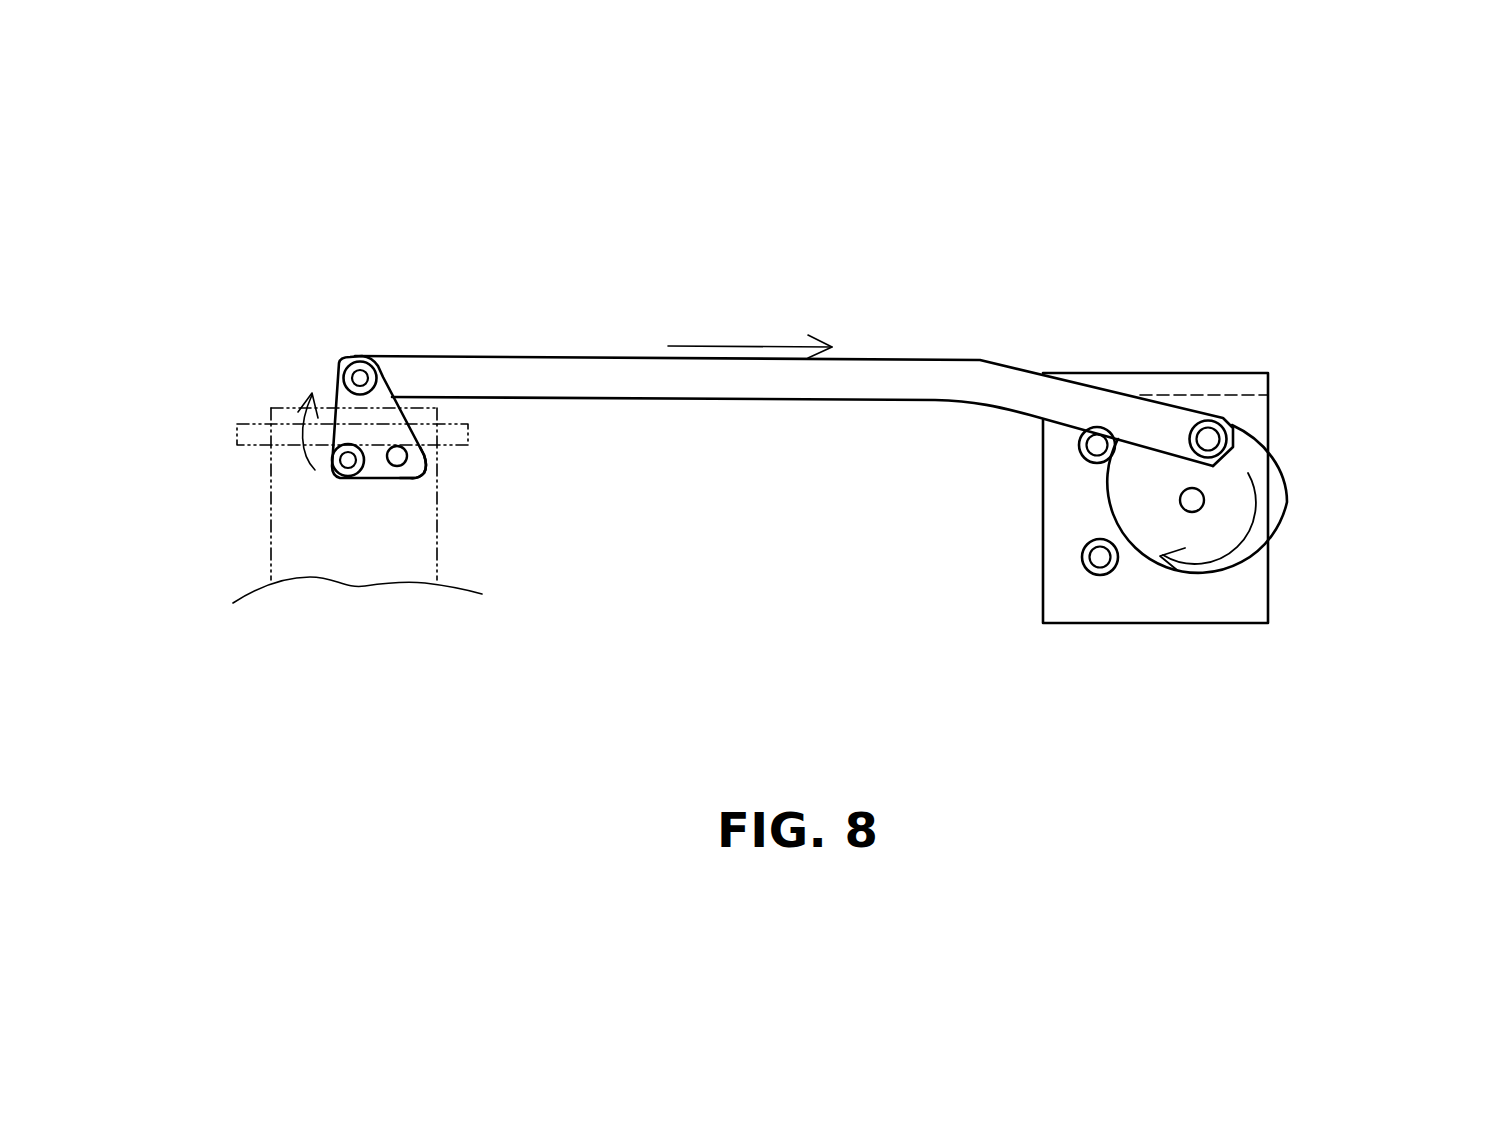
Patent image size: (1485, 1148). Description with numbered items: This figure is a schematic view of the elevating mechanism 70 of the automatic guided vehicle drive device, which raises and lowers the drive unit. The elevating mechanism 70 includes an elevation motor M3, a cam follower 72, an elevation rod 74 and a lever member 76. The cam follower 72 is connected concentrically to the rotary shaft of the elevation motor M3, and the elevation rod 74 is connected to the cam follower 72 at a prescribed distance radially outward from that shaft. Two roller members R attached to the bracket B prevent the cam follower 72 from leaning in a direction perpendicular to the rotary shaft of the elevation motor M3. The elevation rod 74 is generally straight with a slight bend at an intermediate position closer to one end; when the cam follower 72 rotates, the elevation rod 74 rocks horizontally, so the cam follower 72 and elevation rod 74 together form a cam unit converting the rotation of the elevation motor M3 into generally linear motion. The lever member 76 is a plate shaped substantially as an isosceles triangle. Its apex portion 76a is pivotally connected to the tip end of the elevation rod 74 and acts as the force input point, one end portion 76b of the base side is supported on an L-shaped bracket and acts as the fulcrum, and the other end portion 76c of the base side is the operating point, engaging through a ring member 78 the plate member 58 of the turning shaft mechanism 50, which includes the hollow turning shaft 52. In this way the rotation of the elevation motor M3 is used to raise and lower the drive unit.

The turning shaft mechanism 50 is at (354, 478).
The hollow turning shaft 52 is at (269, 491).
The annular plate member 58 is at (468, 432).
The elevating mechanism 70 is at (852, 455).
The cam follower 72 is at (1285, 478).
The elevation rod 74 is at (545, 357).
The lever member 76 is at (338, 383).
The apex portion 76a is at (365, 360).
The end portion of the base side 76b is at (422, 472).
The other end portion of the base side 76c is at (333, 488).
The ring member 78 is at (357, 478).
The bracket B is at (1158, 374).
The elevation motor M3 is at (1268, 578).
The roller members R is at (1078, 440).